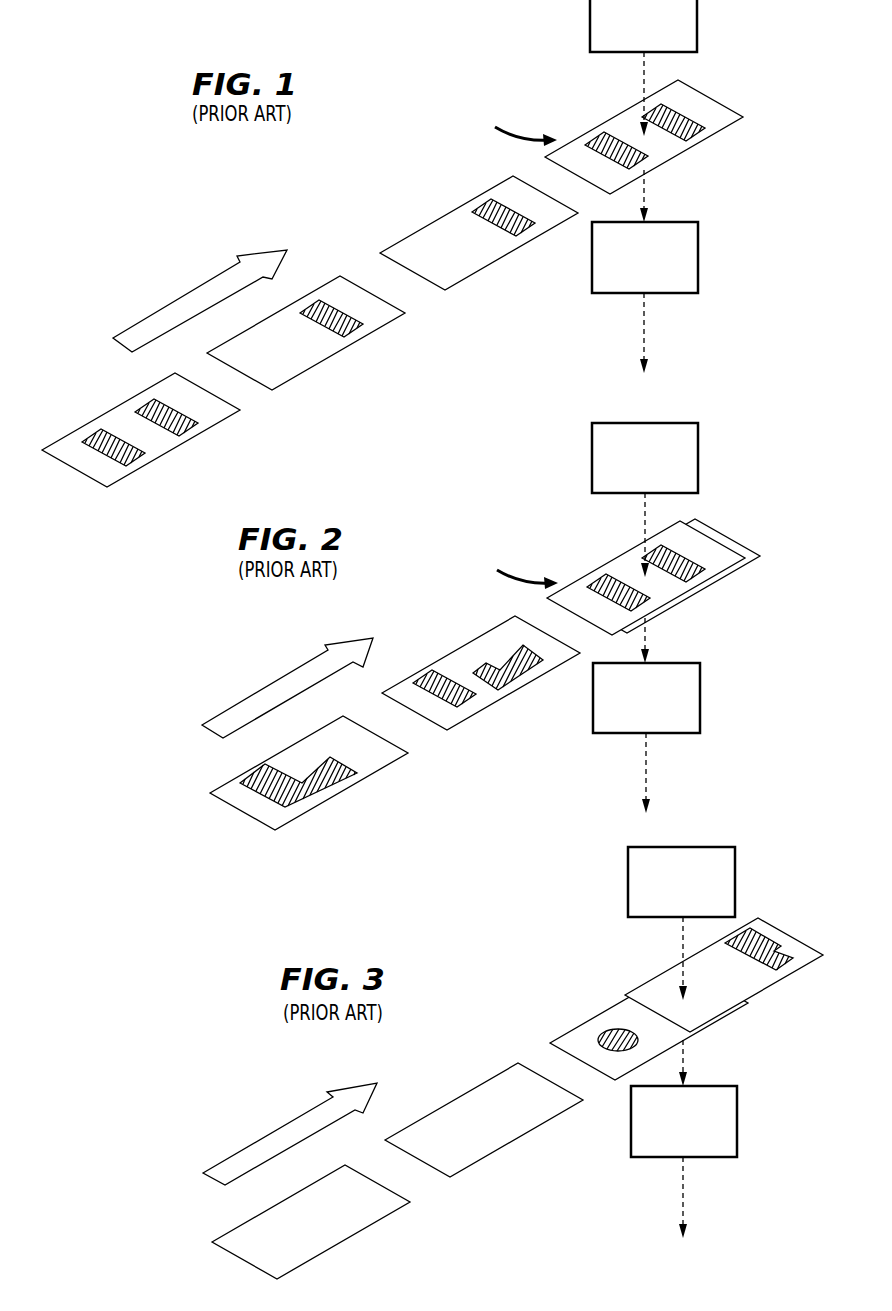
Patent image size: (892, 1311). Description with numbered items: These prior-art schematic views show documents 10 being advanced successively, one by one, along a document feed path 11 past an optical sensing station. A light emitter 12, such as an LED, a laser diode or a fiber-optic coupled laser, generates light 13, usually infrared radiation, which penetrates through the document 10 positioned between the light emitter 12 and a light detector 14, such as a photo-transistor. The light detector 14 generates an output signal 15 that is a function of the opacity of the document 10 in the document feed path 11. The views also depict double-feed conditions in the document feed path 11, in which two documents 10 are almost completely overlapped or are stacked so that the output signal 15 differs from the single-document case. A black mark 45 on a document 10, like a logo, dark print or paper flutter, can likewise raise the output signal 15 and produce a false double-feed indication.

In FIG. 1, the document 10 is at (290, 372).
In FIG. 2, the document 10 is at (290, 813).
In FIG. 3, the document 10 is at (385, 1207).
In FIG. 1, the document feed path 11 is at (515, 123).
In FIG. 2, the document feed path 11 is at (516, 566).
In FIG. 1, the light emitter 12 is at (697, 17).
In FIG. 2, the light emitter 12 is at (698, 461).
In FIG. 3, the light emitter 12 is at (735, 886).
In FIG. 1, the light 13 is at (642, 80).
In FIG. 2, the light 13 is at (643, 523).
In FIG. 3, the light 13 is at (680, 945).
In FIG. 1, the light detector 14 is at (698, 270).
In FIG. 2, the light detector 14 is at (700, 710).
In FIG. 3, the light detector 14 is at (737, 1134).
In FIG. 1, the output signal 15 is at (644, 325).
In FIG. 2, the output signal 15 is at (645, 765).
In FIG. 3, the output signal 15 is at (683, 1190).
In FIG. 2, the black mark 45 is at (498, 666).